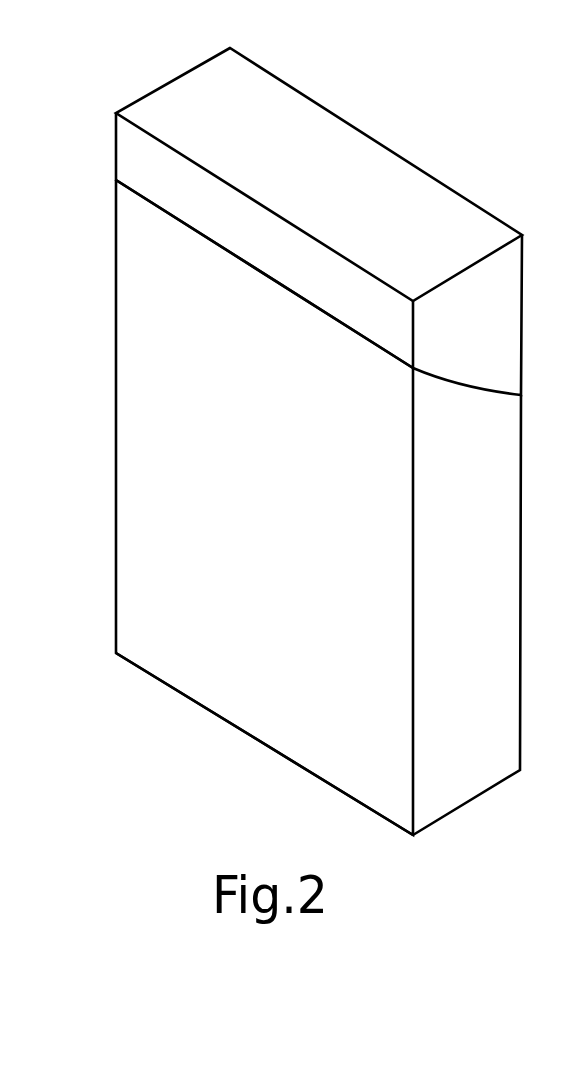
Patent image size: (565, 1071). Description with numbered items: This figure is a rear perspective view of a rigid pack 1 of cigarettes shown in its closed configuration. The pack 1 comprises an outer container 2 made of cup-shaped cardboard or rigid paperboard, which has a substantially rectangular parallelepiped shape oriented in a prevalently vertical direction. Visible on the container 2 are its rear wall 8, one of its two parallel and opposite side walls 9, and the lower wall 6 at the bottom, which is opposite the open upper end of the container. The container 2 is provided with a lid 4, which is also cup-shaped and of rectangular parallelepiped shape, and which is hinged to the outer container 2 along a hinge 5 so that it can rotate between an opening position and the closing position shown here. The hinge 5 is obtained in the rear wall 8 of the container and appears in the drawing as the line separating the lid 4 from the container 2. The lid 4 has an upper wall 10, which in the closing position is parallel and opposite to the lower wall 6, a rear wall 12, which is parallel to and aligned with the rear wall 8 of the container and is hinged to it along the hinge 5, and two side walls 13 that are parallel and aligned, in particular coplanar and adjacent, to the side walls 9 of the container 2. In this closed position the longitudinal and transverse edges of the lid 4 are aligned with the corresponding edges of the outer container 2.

The rigid pack of cigarettes 1 is at (264, 441).
The outer container 2 is at (263, 507).
The lid 4 is at (269, 221).
The hinge 5 is at (195, 234).
The lower wall 6 is at (219, 722).
The rear wall 8 is at (270, 513).
The side walls 9 is at (482, 592).
The upper wall 10 is at (339, 188).
The rear wall 12 is at (277, 252).
The side walls 13 is at (488, 343).